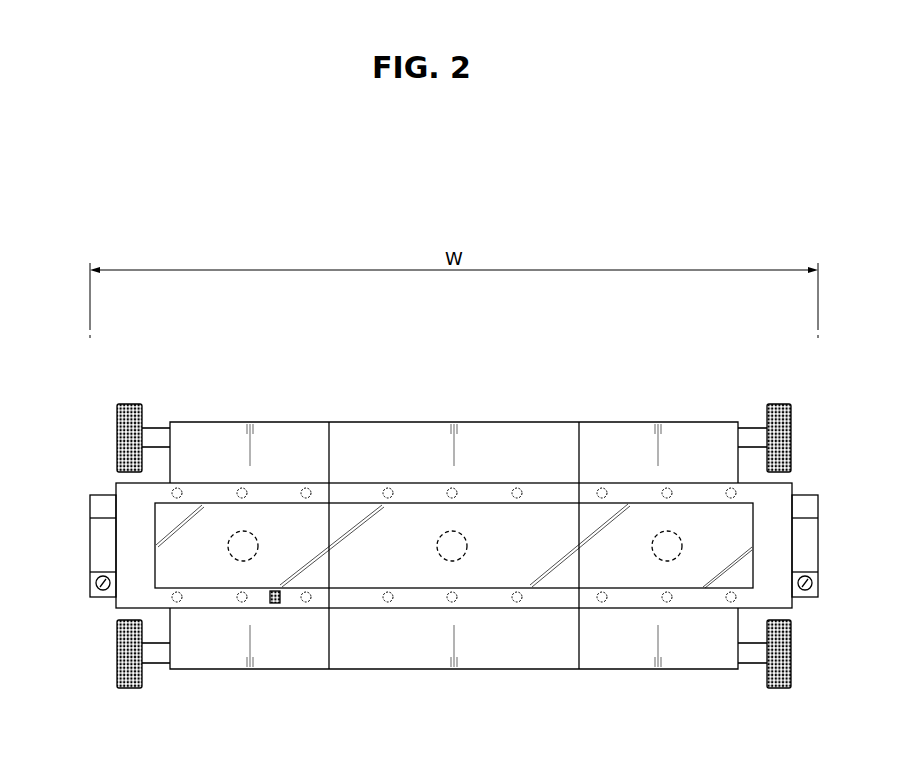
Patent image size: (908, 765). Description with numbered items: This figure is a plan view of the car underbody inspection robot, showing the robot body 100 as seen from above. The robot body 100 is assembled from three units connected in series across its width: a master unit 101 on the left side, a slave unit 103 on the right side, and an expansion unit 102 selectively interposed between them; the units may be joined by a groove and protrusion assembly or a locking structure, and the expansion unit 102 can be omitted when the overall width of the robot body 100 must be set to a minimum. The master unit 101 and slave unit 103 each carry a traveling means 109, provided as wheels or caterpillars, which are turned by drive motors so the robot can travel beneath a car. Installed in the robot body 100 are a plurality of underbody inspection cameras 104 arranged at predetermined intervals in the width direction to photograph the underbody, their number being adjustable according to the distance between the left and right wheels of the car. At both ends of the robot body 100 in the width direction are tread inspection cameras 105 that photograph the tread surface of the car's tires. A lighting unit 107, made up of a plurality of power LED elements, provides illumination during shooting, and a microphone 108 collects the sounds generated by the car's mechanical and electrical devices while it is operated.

The robot body 100 is at (318, 343).
The master unit 101 is at (248, 689).
The expansion unit 102 is at (455, 689).
The slave unit 103 is at (660, 689).
The underbody inspection camera 104 is at (226, 533).
The tread inspection camera 105 is at (105, 590).
The lighting unit 107 is at (724, 486).
The microphone 108 is at (282, 604).
The traveling means 109 is at (127, 389).